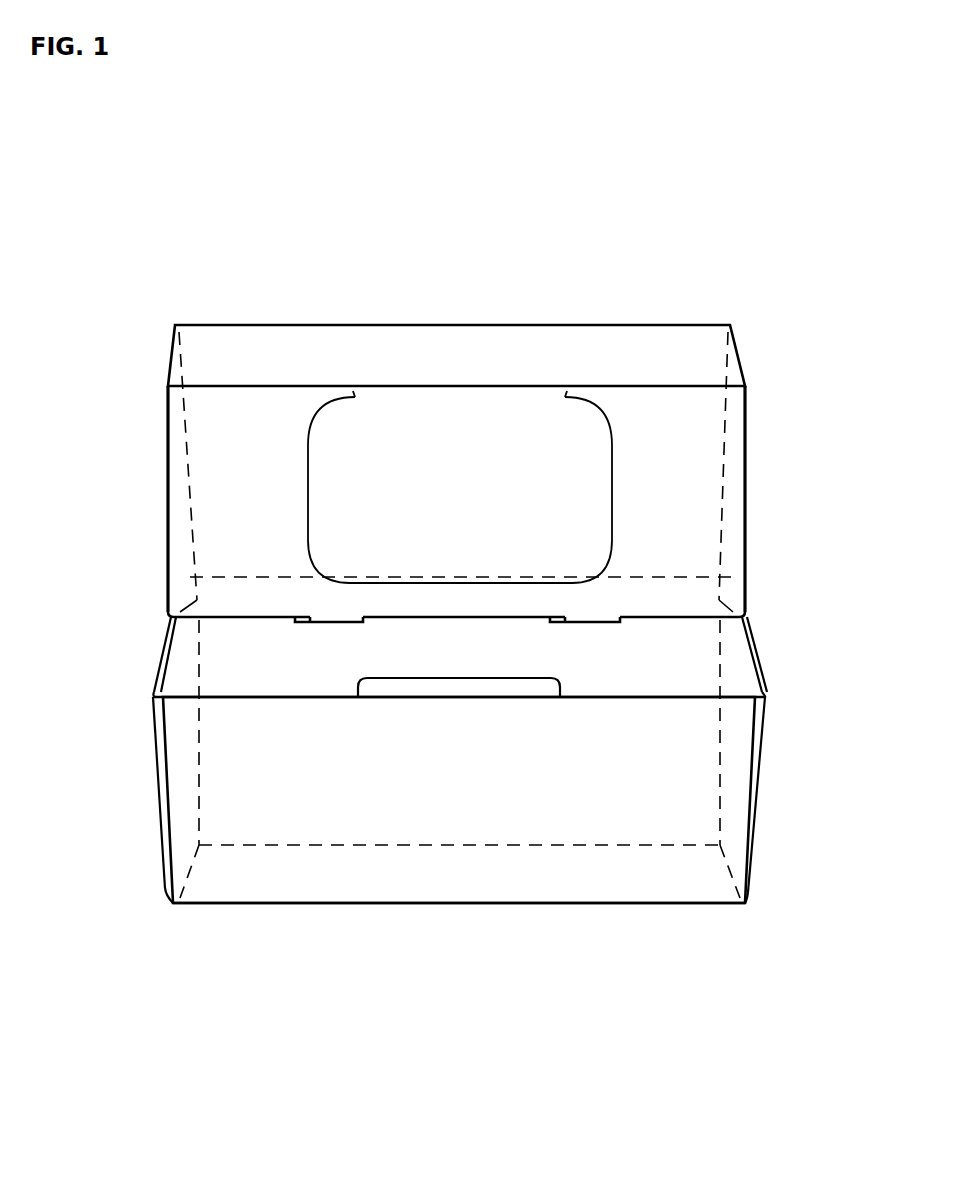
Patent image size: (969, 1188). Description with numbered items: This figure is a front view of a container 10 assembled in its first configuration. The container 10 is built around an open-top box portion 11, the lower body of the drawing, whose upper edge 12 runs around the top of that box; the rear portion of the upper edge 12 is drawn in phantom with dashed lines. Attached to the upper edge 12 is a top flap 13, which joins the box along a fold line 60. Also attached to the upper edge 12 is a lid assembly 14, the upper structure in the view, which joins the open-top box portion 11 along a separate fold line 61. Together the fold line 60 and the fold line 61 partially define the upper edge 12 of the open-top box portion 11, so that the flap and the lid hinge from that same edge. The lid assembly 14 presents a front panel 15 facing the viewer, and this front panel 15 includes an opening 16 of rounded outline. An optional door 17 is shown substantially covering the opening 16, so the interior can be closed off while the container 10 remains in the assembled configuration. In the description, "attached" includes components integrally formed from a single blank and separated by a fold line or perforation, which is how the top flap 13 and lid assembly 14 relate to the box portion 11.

The container 10 is at (661, 290).
The open-top box portion 11 is at (597, 868).
The upper edge 12 is at (645, 697).
The top flap 13 is at (246, 664).
The lid assembly 14 is at (547, 325).
The front panel 15 is at (678, 437).
The opening 16 is at (308, 484).
The door 17 is at (459, 433).
The fold line 60 is at (350, 697).
The fold line 61 is at (262, 577).